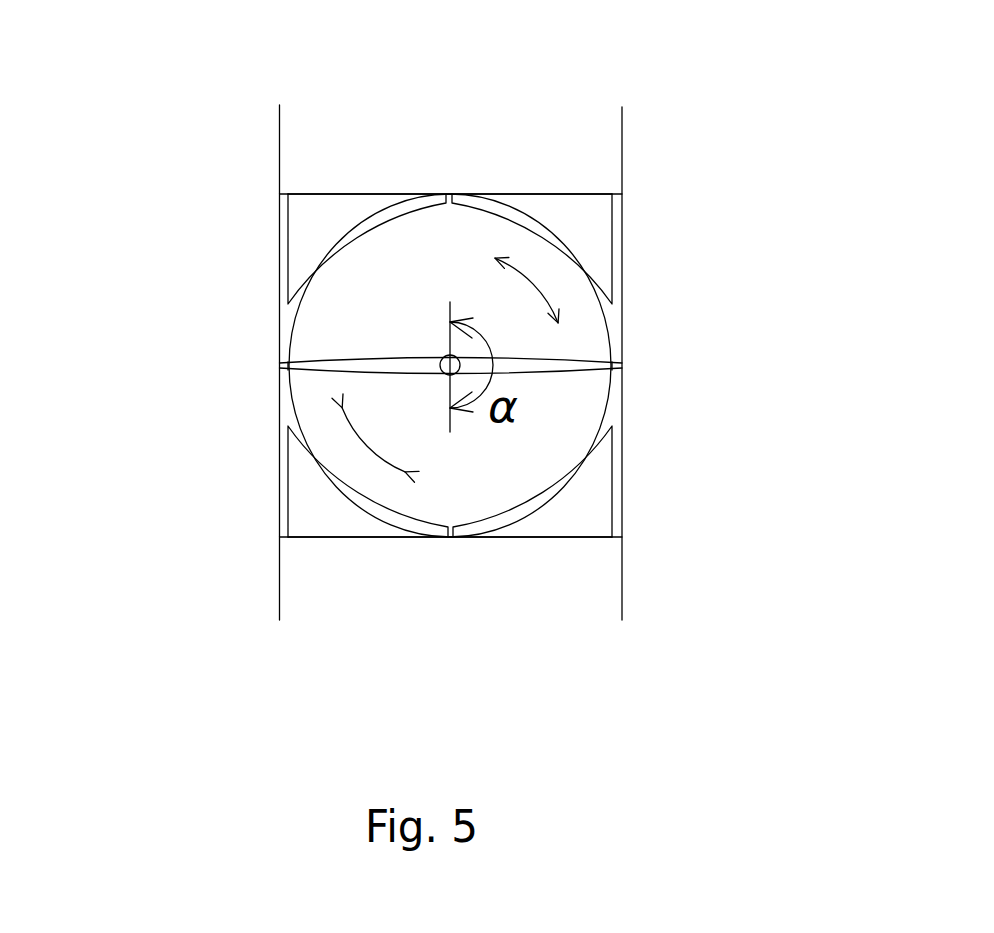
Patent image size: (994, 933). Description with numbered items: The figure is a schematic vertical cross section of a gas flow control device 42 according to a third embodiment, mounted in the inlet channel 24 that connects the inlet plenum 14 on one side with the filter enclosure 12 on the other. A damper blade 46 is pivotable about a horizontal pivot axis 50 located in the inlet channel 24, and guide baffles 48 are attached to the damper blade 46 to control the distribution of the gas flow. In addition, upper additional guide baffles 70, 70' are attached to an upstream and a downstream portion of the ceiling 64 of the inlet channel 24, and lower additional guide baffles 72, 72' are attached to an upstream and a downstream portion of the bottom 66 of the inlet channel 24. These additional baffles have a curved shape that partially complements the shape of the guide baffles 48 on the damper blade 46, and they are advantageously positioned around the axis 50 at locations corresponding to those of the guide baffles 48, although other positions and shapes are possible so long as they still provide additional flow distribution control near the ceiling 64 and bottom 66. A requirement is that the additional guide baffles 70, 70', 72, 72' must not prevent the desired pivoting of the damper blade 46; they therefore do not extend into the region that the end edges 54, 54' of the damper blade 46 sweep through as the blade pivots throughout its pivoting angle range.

The filter enclosure 12 is at (200, 89).
The inlet plenum 14 is at (768, 143).
The inlet channel 24 is at (362, 538).
The gas flow control device 42 is at (603, 104).
The damper blade 46 is at (355, 352).
The guide baffles 48 is at (393, 245).
The pivot axis 50 is at (445, 374).
The end edge of damper blade 54 is at (697, 347).
The end edge of damper blade 54' is at (194, 391).
The ceiling of the inlet channel 64 is at (558, 194).
The bottom of the inlet channel 66 is at (575, 538).
The upper additional guide baffle 70 is at (607, 249).
The upper additional guide baffle 70' is at (300, 235).
The lower additional guide baffle 72 is at (604, 487).
The lower additional guide baffle 72' is at (295, 503).